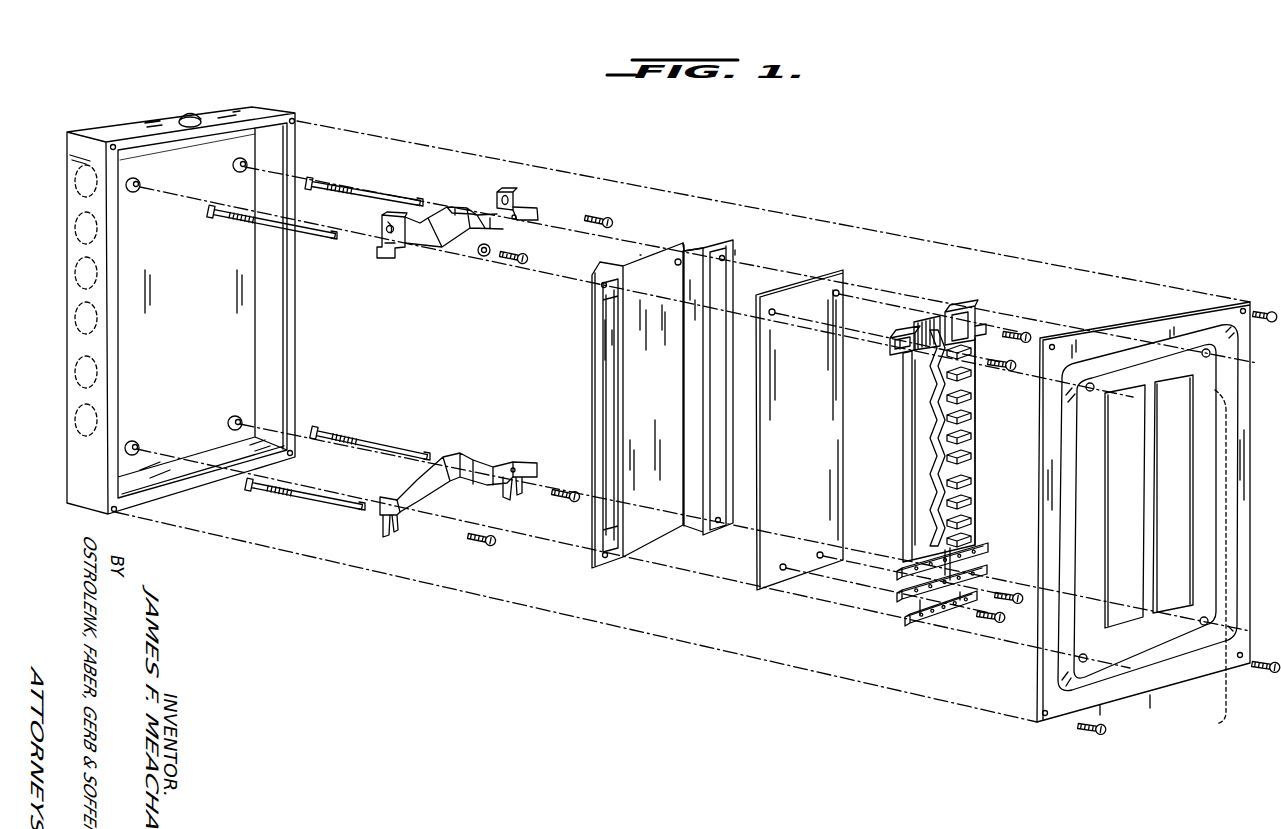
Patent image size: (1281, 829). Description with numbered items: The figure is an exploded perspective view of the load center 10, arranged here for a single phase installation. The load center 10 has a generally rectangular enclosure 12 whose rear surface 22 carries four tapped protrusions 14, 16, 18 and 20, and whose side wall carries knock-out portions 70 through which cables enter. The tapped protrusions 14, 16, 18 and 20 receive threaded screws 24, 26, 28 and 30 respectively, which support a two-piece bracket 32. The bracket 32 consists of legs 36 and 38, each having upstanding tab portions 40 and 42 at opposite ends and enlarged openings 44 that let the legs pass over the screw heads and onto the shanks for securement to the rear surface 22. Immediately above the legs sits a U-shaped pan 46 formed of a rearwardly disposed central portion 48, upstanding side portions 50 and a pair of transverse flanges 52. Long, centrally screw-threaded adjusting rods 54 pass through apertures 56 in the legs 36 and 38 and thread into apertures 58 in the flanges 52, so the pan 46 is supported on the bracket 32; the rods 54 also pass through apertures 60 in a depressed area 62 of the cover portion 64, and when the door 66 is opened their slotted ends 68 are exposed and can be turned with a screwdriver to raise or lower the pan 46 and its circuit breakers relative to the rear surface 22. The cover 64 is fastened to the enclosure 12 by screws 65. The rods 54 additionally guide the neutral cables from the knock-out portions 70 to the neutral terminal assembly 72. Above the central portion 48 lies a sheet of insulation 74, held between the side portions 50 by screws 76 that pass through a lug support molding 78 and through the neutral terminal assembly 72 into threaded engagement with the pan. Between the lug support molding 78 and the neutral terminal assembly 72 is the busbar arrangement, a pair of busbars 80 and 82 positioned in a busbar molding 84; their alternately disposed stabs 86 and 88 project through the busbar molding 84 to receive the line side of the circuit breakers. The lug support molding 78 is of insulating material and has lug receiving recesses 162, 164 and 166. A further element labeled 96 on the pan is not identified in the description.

The load center 10 is at (872, 200).
The enclosure 12 is at (196, 121).
The tapped protrusion 14 is at (140, 180).
The tapped protrusion 16 is at (233, 166).
The tapped protrusion 18 is at (138, 444).
The tapped protrusion 20 is at (236, 416).
The rear surface 22 is at (192, 316).
The threaded screw 24 is at (506, 263).
The threaded screw 26 is at (600, 216).
The threaded screw 28 is at (484, 545).
The threaded screw 30 is at (568, 490).
The two-piece bracket 32 is at (449, 351).
The leg 36 is at (452, 485).
The leg 38 is at (480, 205).
The upstanding tab portion 40 is at (382, 260).
The upstanding tab portion 42 is at (530, 210).
The enlarged opening 44 is at (386, 226).
The U-shaped pan 46 is at (653, 238).
The rearwardly disposed central portion 48 is at (668, 400).
The upstanding side portion 50 is at (690, 244).
The transverse flange 52 is at (738, 248).
The adjusting rod 54 is at (343, 187).
The aperture 56 is at (516, 221).
The aperture 58 is at (726, 258).
The aperture 60 is at (1090, 392).
The depressed area 62 is at (1098, 553).
The cover portion 64 is at (1145, 508).
The screw 65 is at (1272, 310).
The door 66 is at (1192, 727).
The slotted end 68 is at (422, 198).
The knock-out portion 70 is at (97, 420).
The neutral terminal assembly 72 is at (910, 625).
The sheet of insulation 74 is at (820, 405).
The screw 76 is at (1022, 334).
The lug support molding 78 is at (958, 306).
The busbar 80 is at (938, 446).
The busbar 82 is at (977, 445).
The busbar molding 84 is at (920, 385).
The stab 86 is at (972, 430).
The stab 88 is at (972, 466).
The slot 96 is at (602, 398).
The lug receiving recess 162 is at (986, 328).
The lug receiving recess 164 is at (932, 328).
The lug receiving recess 166 is at (893, 342).